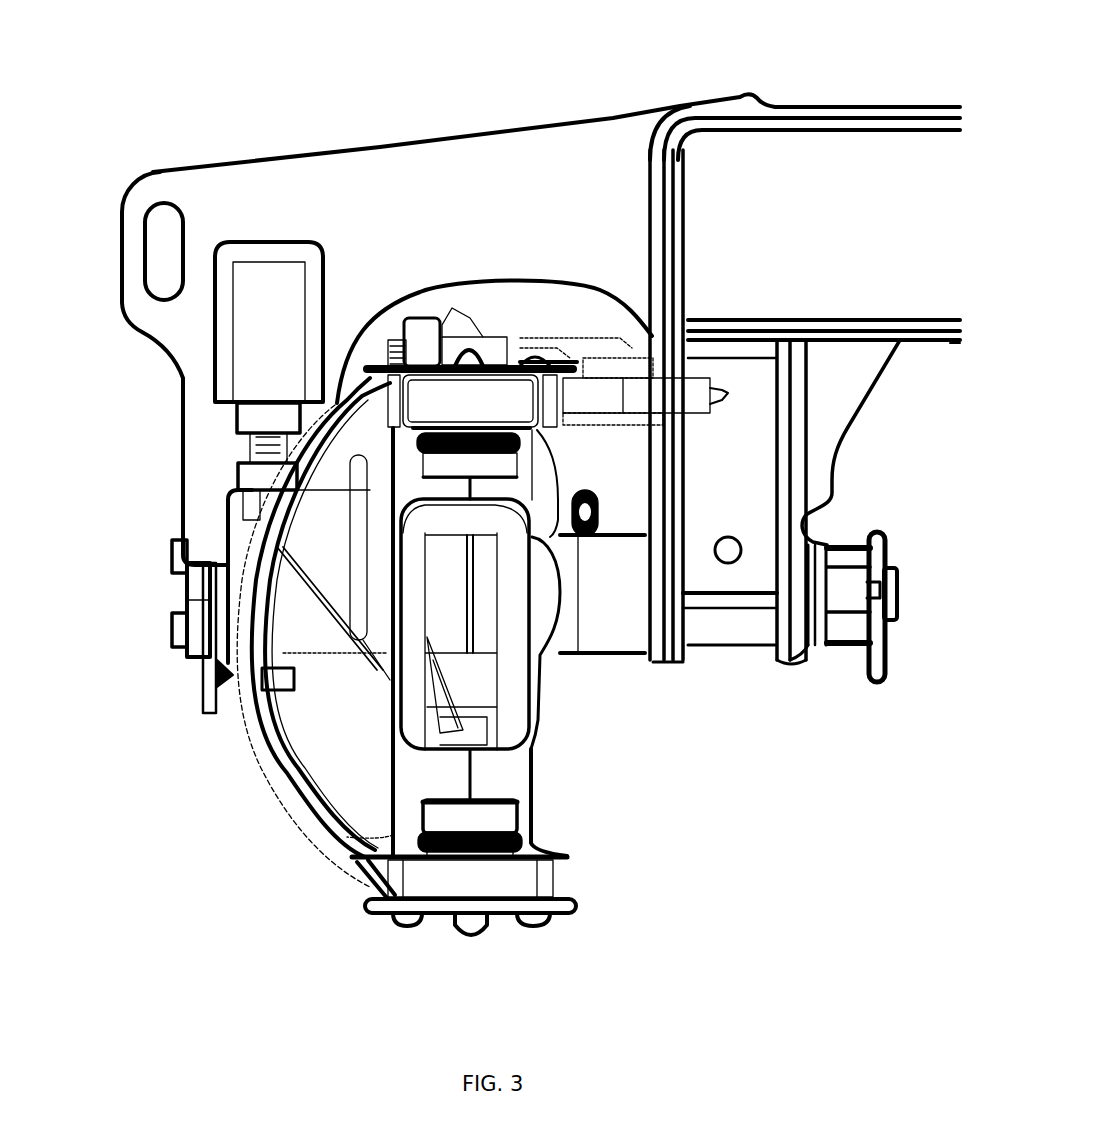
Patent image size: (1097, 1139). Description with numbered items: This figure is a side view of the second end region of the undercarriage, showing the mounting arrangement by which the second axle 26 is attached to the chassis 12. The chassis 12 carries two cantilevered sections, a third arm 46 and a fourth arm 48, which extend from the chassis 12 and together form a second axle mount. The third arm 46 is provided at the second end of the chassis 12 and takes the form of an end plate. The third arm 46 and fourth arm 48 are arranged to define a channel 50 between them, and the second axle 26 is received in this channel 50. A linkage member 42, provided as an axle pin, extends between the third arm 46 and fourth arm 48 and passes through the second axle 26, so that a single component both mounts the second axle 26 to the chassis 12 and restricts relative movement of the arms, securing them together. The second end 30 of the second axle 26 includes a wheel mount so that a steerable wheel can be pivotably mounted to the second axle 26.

The chassis 12 is at (543, 177).
The second axle 26 is at (538, 640).
The second end 30 is at (430, 880).
The linkage member 42 is at (853, 627).
The third arm 46 is at (200, 483).
The fourth arm 48 is at (740, 577).
The channel 50 is at (495, 300).